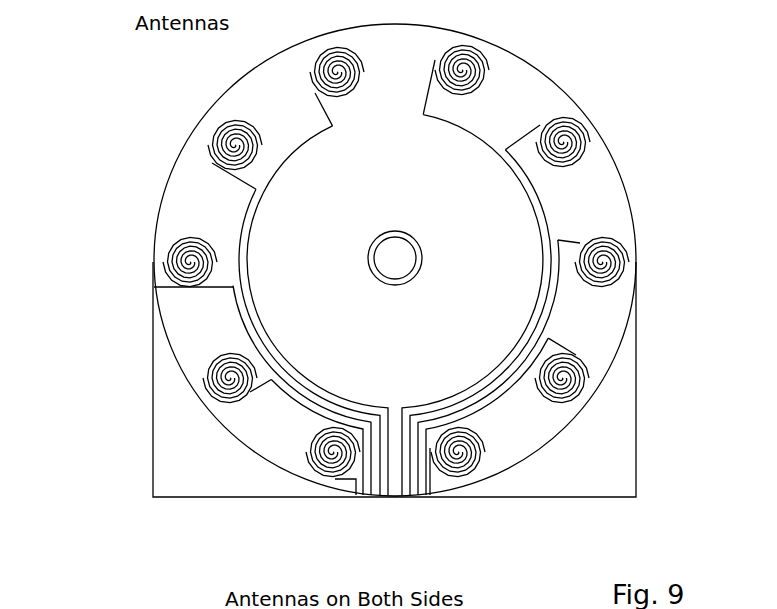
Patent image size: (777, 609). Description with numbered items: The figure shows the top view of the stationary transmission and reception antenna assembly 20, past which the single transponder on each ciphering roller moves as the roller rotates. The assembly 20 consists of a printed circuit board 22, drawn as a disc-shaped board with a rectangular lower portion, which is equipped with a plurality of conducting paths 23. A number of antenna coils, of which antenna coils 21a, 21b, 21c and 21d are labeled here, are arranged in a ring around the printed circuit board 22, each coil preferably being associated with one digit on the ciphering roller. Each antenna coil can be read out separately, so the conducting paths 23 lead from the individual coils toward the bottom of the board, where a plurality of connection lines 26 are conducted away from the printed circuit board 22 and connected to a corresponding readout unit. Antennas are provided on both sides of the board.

The transmission and reception antenna assembly 20 is at (185, 423).
The antenna coil 21a is at (458, 457).
The antenna coil 21b is at (564, 385).
The antenna coil 21c is at (608, 258).
The antenna coil 21d is at (572, 135).
The printed circuit board 22 is at (190, 478).
The conducting paths 23 is at (185, 268).
The connection lines 26 is at (384, 497).